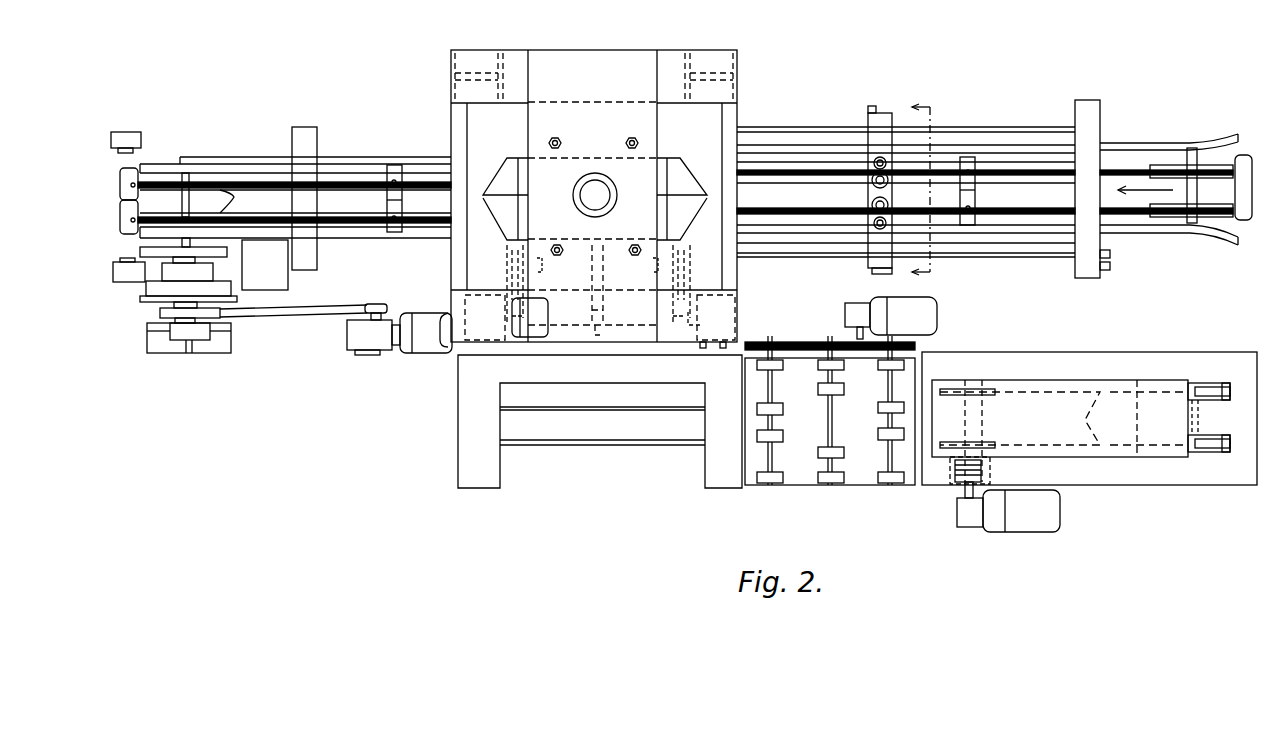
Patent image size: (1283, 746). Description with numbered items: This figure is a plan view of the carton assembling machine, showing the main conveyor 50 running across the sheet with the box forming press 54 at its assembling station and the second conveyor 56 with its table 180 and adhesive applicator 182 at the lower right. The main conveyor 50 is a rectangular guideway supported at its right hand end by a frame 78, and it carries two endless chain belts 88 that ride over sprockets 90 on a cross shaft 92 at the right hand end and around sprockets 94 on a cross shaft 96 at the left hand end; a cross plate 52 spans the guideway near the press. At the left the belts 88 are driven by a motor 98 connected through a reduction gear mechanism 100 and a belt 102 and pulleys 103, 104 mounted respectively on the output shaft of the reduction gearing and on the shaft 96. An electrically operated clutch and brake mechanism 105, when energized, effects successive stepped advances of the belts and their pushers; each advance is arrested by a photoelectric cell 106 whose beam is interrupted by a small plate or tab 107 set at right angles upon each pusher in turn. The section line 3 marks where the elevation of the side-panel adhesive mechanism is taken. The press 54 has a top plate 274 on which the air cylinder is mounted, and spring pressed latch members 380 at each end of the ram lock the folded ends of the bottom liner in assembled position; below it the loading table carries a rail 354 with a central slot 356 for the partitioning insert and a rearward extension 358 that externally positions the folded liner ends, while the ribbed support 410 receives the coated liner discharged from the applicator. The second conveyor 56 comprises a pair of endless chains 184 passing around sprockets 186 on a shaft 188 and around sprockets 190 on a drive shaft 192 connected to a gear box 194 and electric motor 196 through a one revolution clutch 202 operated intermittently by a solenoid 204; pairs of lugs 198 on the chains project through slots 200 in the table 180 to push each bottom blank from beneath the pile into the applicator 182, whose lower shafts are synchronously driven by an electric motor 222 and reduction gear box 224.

The section line 3— 3 is at (929, 185).
The main conveyor 50 is at (1151, 138).
The end plate 52 is at (881, 112).
The press 54 is at (740, 117).
The second conveyor 56 is at (922, 480).
The frame 78 is at (1086, 108).
The endless chain belts 88 is at (1107, 204).
The sprockets 90 is at (1228, 222).
The cross shaft 92 is at (1191, 224).
The sprockets 94 is at (230, 195).
The cross shaft 96 is at (186, 172).
The motor 98 is at (120, 226).
The reduction gear mechanism 100 is at (350, 349).
The belt 102 is at (276, 318).
The pulley 103 is at (384, 305).
The pulley 104 is at (212, 340).
The clutch and brake mechanism 105 is at (142, 299).
The photoelectric cell 106 is at (118, 263).
The plate or tab 107 is at (398, 182).
The table 180 is at (1163, 490).
The adhesive applicator 182 is at (766, 491).
The endless chains 184 is at (1060, 418).
The sprockets 186 is at (1214, 388).
The shaft 188 is at (1186, 414).
The sprockets 190 is at (942, 465).
The drive shaft 192 is at (972, 440).
The gear box 194 is at (976, 520).
The electric motor 196 is at (1043, 520).
The lugs 198 is at (1230, 392).
The slots 200 is at (1217, 382).
The one revolution clutch 202 is at (982, 470).
The solenoid 204 is at (1020, 481).
The electric motor 222 is at (925, 327).
The reduction gear box 224 is at (858, 293).
The top plate 274 is at (600, 50).
The rail 354 is at (632, 342).
The slot 356 is at (580, 344).
The rearward extension 358 is at (690, 342).
The spring pressed latch members 380 is at (510, 264).
The ribbed support 410 is at (586, 443).